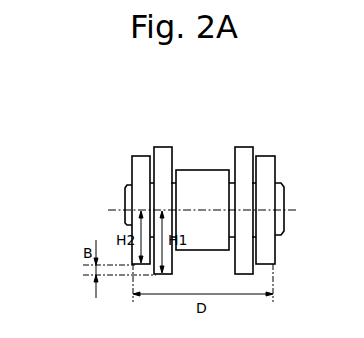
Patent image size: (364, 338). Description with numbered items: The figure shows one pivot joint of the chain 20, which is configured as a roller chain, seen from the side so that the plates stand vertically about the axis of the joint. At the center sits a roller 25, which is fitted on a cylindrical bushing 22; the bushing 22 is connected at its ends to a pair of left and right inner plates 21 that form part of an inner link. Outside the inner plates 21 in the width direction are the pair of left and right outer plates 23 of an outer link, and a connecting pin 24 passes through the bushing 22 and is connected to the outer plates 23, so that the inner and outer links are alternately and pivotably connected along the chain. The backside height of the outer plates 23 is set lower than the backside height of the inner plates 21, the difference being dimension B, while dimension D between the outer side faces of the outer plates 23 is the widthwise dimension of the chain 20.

The chain 20 is at (61, 106).
The inner plates 21 is at (163, 185).
The bushings 22 is at (233, 227).
The outer plates 23 is at (142, 184).
The connecting pins 24 is at (284, 203).
The rollers 25 is at (206, 189).